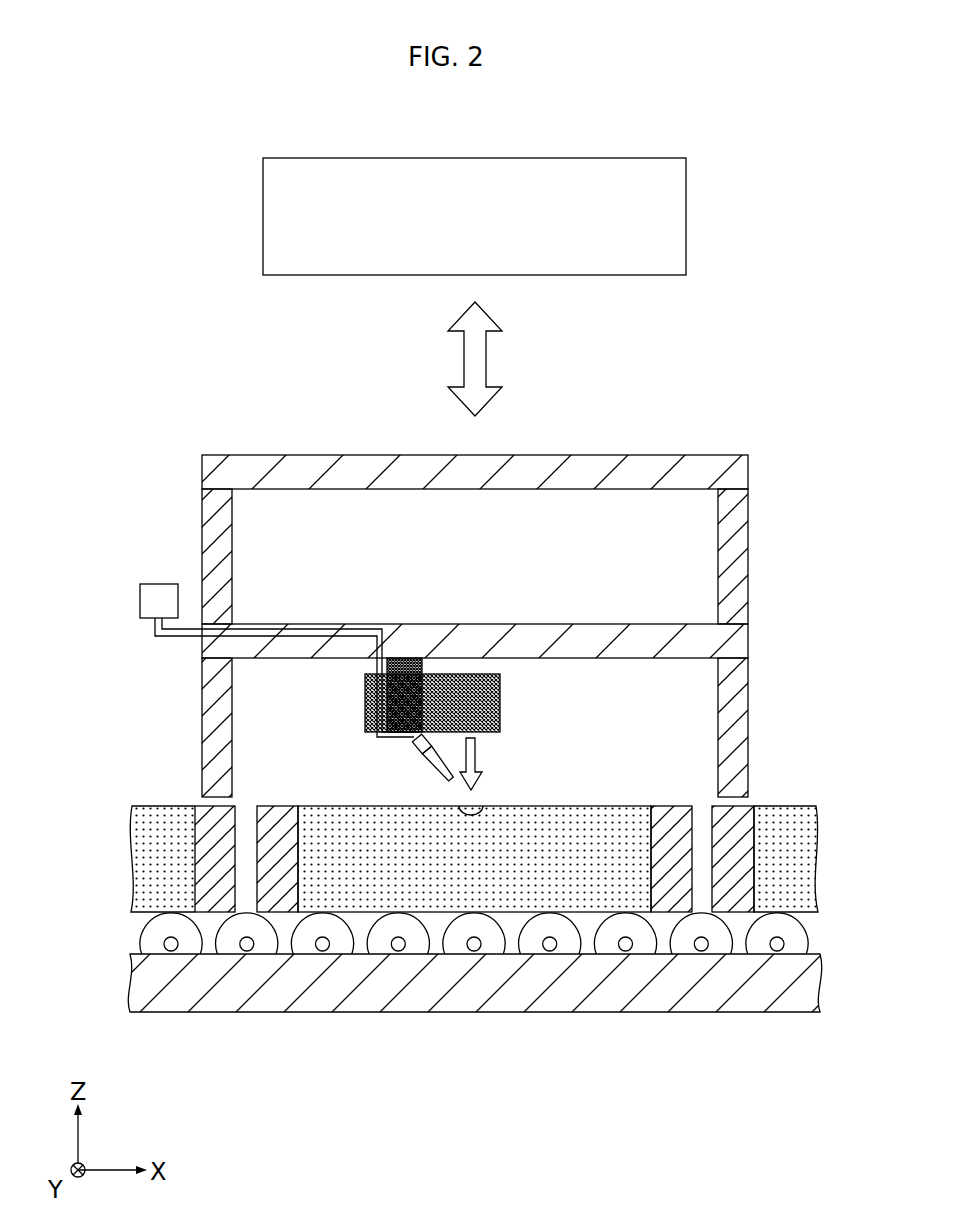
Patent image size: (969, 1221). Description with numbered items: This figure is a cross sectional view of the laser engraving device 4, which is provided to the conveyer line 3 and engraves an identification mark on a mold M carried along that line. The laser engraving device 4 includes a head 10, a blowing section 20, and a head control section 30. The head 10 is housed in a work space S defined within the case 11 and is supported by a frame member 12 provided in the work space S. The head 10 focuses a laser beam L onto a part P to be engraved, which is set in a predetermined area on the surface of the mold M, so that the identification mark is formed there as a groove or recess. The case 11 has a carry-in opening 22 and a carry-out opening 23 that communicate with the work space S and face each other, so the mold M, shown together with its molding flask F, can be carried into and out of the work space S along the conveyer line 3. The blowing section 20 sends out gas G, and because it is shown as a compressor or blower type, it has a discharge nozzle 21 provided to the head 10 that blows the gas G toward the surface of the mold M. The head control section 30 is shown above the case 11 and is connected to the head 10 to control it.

The head control section 30 is at (624, 157).
The laser engraving device 4 is at (444, 551).
The case 11 is at (661, 455).
The frame member 12 is at (654, 623).
The blowing section 20 is at (157, 583).
The head 10 is at (502, 694).
The discharge nozzle 21 is at (416, 746).
The carry-in opening 22 is at (203, 802).
The carry-out opening 23 is at (737, 800).
The conveyer line 3 is at (688, 1013).
The work space S is at (280, 702).
The gas G is at (443, 776).
The laser beam L is at (477, 754).
The mold M is at (610, 806).
The molding flask F is at (662, 806).
The part to be engraved P is at (470, 803).